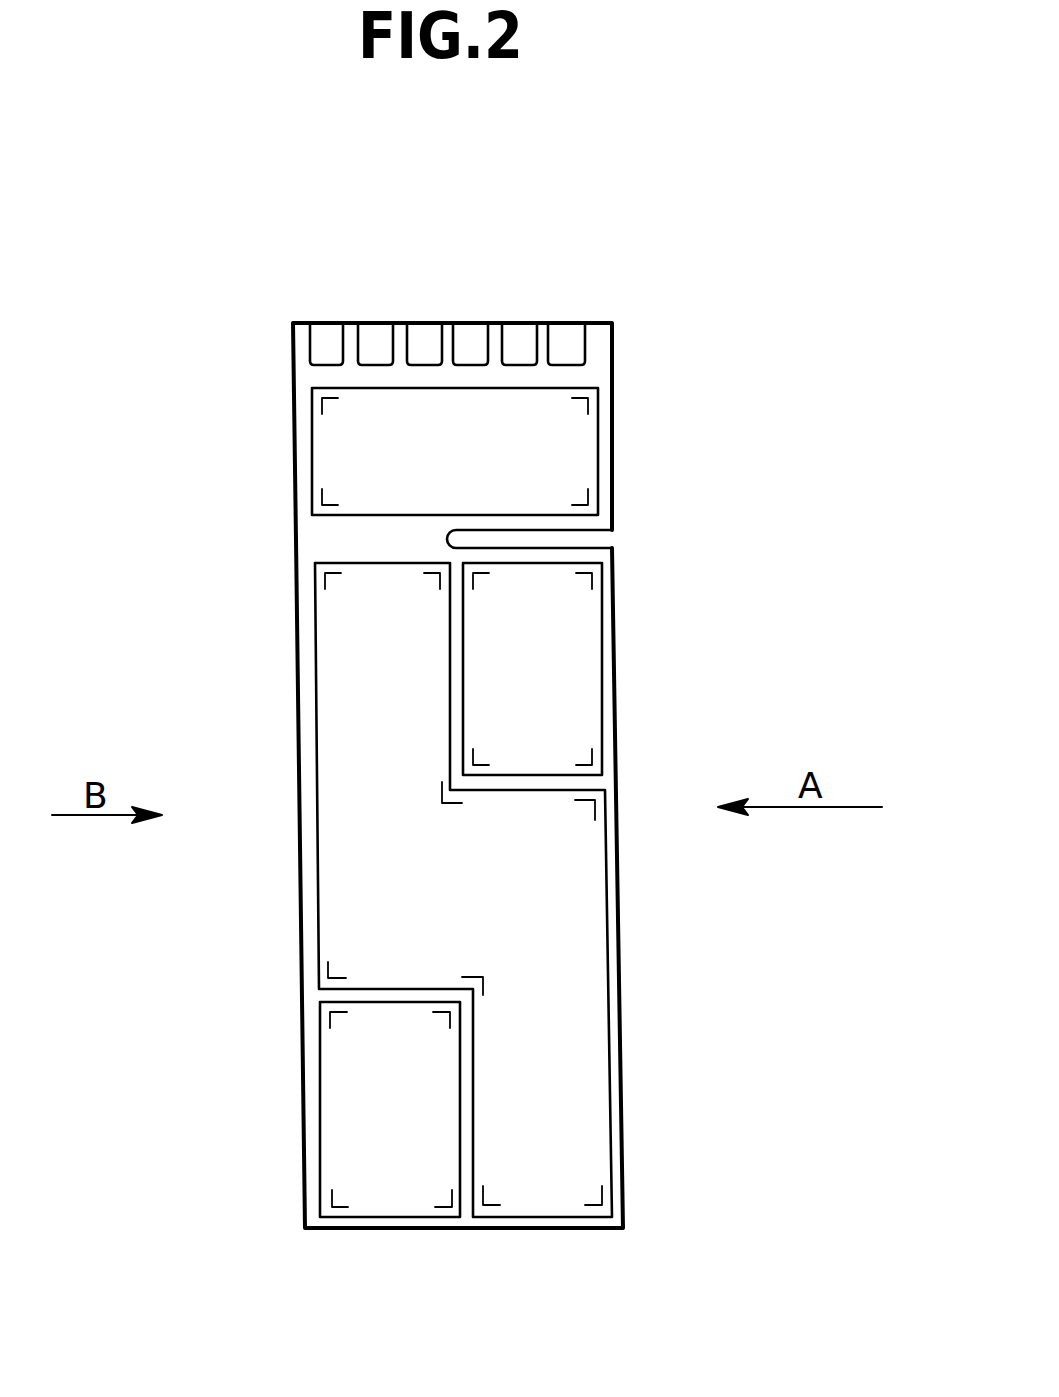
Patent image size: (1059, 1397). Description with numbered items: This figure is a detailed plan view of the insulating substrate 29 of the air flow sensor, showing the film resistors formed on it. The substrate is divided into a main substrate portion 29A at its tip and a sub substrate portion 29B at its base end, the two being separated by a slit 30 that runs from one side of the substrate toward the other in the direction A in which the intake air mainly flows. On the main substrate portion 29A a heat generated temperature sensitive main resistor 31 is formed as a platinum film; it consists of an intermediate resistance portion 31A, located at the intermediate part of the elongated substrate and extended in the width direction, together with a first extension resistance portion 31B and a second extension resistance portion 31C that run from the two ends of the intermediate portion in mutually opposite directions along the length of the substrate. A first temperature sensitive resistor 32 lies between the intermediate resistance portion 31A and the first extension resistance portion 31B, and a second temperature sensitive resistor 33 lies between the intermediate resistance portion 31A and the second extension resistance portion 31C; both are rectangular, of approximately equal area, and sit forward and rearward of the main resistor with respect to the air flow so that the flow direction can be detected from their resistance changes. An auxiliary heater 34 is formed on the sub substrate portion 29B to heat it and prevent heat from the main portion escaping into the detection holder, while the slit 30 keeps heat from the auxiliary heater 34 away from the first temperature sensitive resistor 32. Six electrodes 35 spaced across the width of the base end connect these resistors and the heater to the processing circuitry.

The insulating substrate 29 is at (602, 283).
The main substrate portion 29A is at (613, 890).
The sub substrate portion 29B is at (608, 452).
The slit 30 is at (580, 541).
The heat generated temperature sensitive main resistor 31 is at (313, 915).
The intermediate resistance portion 31A is at (580, 972).
The first extension resistance portion 31B is at (340, 612).
The second extension resistance portion 31C is at (587, 1138).
The first temperature sensitive resistor 32 is at (582, 663).
The second temperature sensitive resistor 33 is at (337, 1112).
The auxiliary heater 34 is at (332, 442).
The electrodes 35 is at (332, 332).